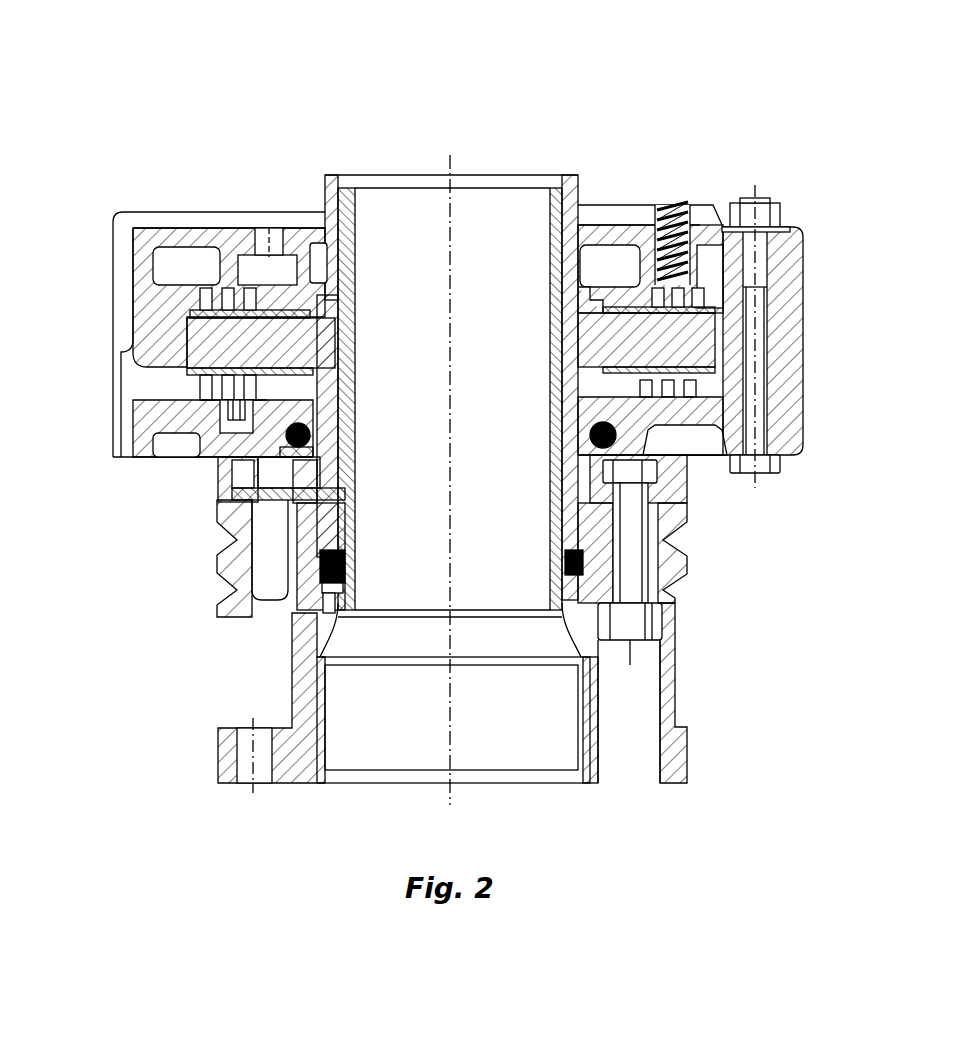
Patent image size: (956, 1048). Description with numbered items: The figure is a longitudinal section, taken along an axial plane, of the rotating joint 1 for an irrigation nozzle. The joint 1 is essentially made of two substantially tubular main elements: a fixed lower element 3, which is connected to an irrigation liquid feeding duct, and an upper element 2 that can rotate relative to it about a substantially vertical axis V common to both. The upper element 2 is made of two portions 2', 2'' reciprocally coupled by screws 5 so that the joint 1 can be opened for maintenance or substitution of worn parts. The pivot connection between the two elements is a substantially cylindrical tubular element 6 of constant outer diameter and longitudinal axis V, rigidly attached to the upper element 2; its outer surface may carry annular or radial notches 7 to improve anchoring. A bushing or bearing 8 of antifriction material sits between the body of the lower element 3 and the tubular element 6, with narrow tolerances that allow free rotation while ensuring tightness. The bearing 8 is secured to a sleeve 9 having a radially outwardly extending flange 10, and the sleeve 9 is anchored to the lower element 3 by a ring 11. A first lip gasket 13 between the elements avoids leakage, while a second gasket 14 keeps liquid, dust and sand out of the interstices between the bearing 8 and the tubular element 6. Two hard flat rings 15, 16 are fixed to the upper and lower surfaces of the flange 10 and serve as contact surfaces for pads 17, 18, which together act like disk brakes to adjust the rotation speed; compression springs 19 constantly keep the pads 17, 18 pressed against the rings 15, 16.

The rotating joint 1 is at (640, 573).
The upper element 2 is at (652, 274).
The first portion of the upper element 2' is at (220, 276).
The second portion of the upper element 2'' is at (207, 478).
The lower element 3 is at (685, 690).
The screws 5 is at (760, 307).
The tubular element 6 is at (403, 183).
The notches 7 is at (322, 200).
The bushing or bearing 8 is at (347, 470).
The sleeve 9 is at (323, 393).
The flange 10 is at (200, 345).
The ring 11 is at (662, 483).
The first lip gasket 13 is at (305, 583).
The second gasket 14 is at (283, 462).
The flat ring 15 is at (222, 297).
The flat ring 16 is at (152, 405).
The pad 17 is at (233, 237).
The pad 18 is at (255, 395).
The compression springs 19 is at (695, 212).
The vertical axis V is at (450, 165).